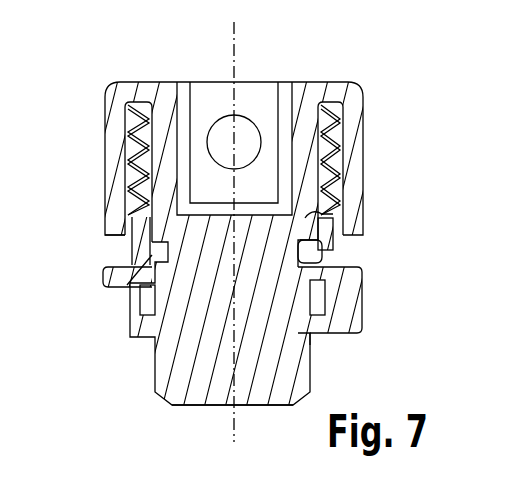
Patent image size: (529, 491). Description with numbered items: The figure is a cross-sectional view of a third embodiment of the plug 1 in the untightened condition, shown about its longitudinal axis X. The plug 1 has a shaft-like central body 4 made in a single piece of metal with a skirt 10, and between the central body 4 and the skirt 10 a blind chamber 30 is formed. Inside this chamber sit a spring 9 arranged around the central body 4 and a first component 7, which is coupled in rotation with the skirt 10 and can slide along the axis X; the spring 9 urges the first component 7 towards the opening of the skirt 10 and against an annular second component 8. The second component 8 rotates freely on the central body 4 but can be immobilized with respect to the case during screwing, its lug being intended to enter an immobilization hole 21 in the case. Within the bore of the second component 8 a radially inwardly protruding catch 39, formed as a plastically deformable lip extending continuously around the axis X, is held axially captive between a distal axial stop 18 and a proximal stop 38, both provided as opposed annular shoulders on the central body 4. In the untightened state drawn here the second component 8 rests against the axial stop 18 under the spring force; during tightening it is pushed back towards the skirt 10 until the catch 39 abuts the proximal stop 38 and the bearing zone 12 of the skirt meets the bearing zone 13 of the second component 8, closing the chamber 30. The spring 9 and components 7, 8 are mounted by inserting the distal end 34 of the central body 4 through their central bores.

The longitudinal axis X is at (235, 50).
The plug 1 is at (347, 53).
The central body 4 is at (262, 362).
The first component 7 is at (333, 250).
The second component 8 is at (374, 290).
The spring 9 is at (340, 174).
The skirt 10 is at (363, 122).
The bearing zone 12 is at (110, 235).
The bearing zone 13 is at (125, 268).
The axial stop 18 is at (309, 337).
The immobilization hole 21 is at (348, 285).
The blind chamber 30 is at (342, 146).
The distal end 34 is at (208, 406).
The proximal stop 38 is at (322, 212).
The catch 39 is at (127, 285).